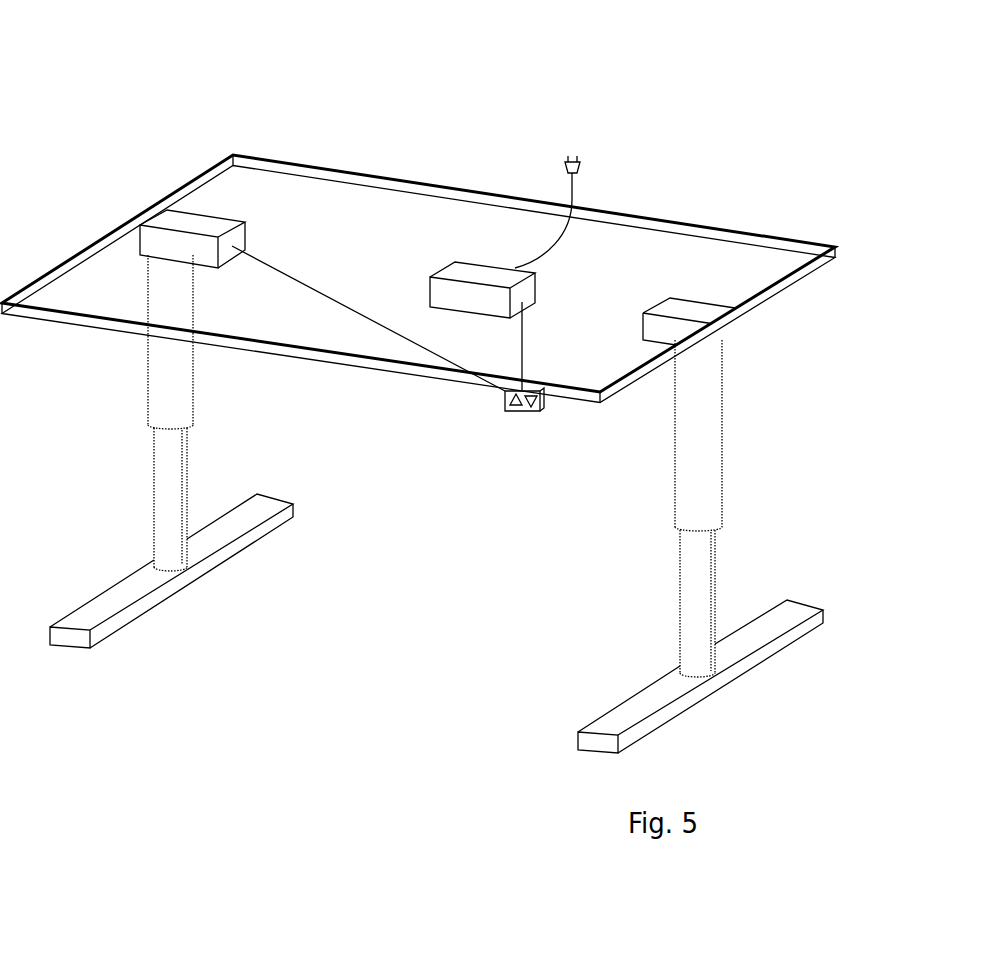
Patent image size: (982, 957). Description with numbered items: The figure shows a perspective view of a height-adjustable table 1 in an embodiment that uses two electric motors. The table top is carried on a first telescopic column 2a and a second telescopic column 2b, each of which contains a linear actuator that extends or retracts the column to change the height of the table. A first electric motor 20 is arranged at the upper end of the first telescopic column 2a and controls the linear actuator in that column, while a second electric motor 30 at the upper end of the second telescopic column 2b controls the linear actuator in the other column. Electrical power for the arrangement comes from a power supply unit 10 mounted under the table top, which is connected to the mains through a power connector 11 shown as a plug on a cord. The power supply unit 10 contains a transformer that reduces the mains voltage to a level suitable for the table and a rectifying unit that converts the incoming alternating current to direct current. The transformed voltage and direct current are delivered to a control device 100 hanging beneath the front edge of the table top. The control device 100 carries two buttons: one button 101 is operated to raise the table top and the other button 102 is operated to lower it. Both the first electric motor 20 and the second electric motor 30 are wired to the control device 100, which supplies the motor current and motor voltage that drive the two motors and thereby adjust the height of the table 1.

The height-adjustable table 1 is at (749, 130).
The first telescopic column 2a is at (724, 440).
The second telescopic column 2b is at (198, 380).
The power supply unit 10 is at (468, 258).
The power connector 11 is at (563, 170).
The electric motor 20 is at (705, 316).
The second electric motor 30 is at (173, 218).
The control device 100 is at (513, 412).
The button 101 is at (505, 400).
The button 102 is at (543, 405).